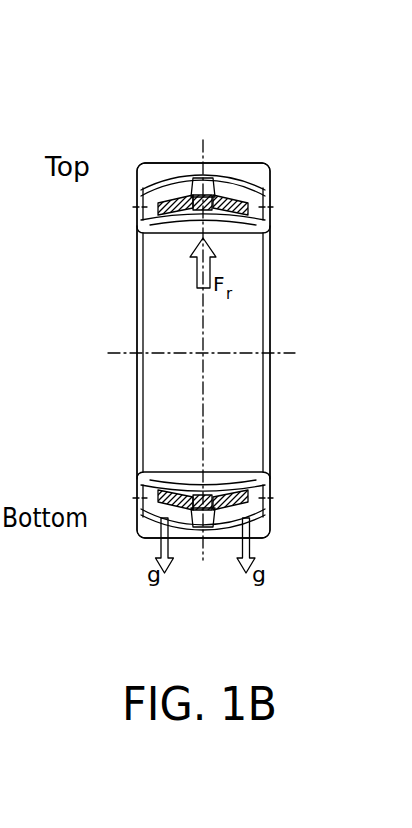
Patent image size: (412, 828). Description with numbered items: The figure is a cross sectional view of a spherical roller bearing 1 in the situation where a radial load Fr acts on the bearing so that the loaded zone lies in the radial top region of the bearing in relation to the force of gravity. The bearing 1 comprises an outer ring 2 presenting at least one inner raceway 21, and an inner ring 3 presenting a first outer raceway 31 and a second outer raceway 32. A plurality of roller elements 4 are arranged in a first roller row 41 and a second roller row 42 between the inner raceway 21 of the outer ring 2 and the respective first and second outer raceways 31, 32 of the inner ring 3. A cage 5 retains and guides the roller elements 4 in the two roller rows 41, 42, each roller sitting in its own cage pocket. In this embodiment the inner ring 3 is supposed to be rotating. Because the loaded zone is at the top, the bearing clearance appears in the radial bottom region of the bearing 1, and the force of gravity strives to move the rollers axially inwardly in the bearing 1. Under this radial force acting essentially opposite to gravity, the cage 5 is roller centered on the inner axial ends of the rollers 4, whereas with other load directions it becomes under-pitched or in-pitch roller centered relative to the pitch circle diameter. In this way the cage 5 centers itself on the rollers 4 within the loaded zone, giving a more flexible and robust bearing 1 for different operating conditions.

The spherical roller bearing 1 is at (102, 110).
The outer ring 2 is at (245, 163).
The inner raceway 21 is at (250, 180).
The inner ring 3 is at (137, 471).
The first outer raceway 31 is at (147, 496).
The second outer raceway 32 is at (250, 489).
The roller elements 4 is at (207, 201).
The first roller row 41 is at (167, 193).
The second roller row 42 is at (258, 186).
The cage 5 is at (228, 216).